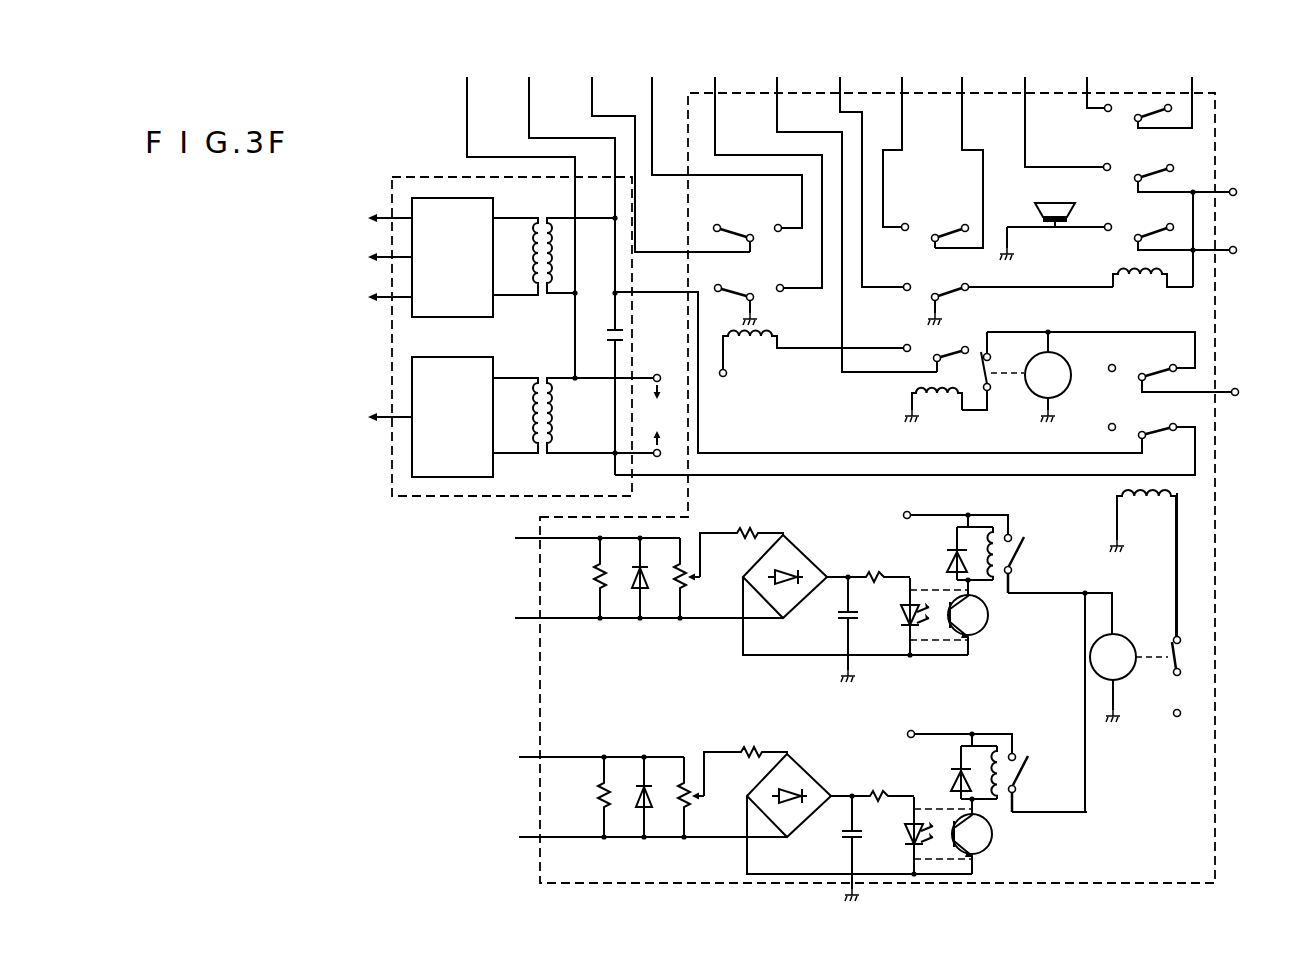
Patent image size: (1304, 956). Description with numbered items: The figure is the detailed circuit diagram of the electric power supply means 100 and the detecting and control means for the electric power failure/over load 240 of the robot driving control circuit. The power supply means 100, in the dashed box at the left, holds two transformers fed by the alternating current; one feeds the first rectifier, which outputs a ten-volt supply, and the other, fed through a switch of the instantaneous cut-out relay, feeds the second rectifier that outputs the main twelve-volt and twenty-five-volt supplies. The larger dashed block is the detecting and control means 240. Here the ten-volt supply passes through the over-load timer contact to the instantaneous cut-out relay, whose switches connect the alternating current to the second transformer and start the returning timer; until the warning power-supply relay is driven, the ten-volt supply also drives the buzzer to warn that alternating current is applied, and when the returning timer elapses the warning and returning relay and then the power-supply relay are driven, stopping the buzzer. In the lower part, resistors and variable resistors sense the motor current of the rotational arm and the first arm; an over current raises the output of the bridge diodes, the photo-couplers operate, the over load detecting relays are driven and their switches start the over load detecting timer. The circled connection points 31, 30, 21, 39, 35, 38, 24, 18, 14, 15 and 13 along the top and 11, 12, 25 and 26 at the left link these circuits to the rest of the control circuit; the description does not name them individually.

The power supply means 100 is at (412, 498).
The detecting and control means for the electric power failure/over load 240 is at (538, 675).
The connection terminal 31 is at (512, 209).
The connection terminal 30 is at (566, 256).
The connection terminal 21 is at (661, 144).
The connection terminal 39 is at (717, 132).
The connection terminal 35 is at (758, 162).
The connection terminal 38 is at (847, 204).
The connection terminal 24 is at (861, 162).
The connection terminal 18 is at (902, 132).
The connection terminal 14 is at (1021, 142).
The connection terminal 15 is at (1054, 102).
The connection terminal 13 is at (1175, 82).
The connection terminal 11 is at (517, 538).
The connection terminal 12 is at (517, 618).
The connection terminal 25 is at (522, 755).
The connection terminal 26 is at (522, 835).